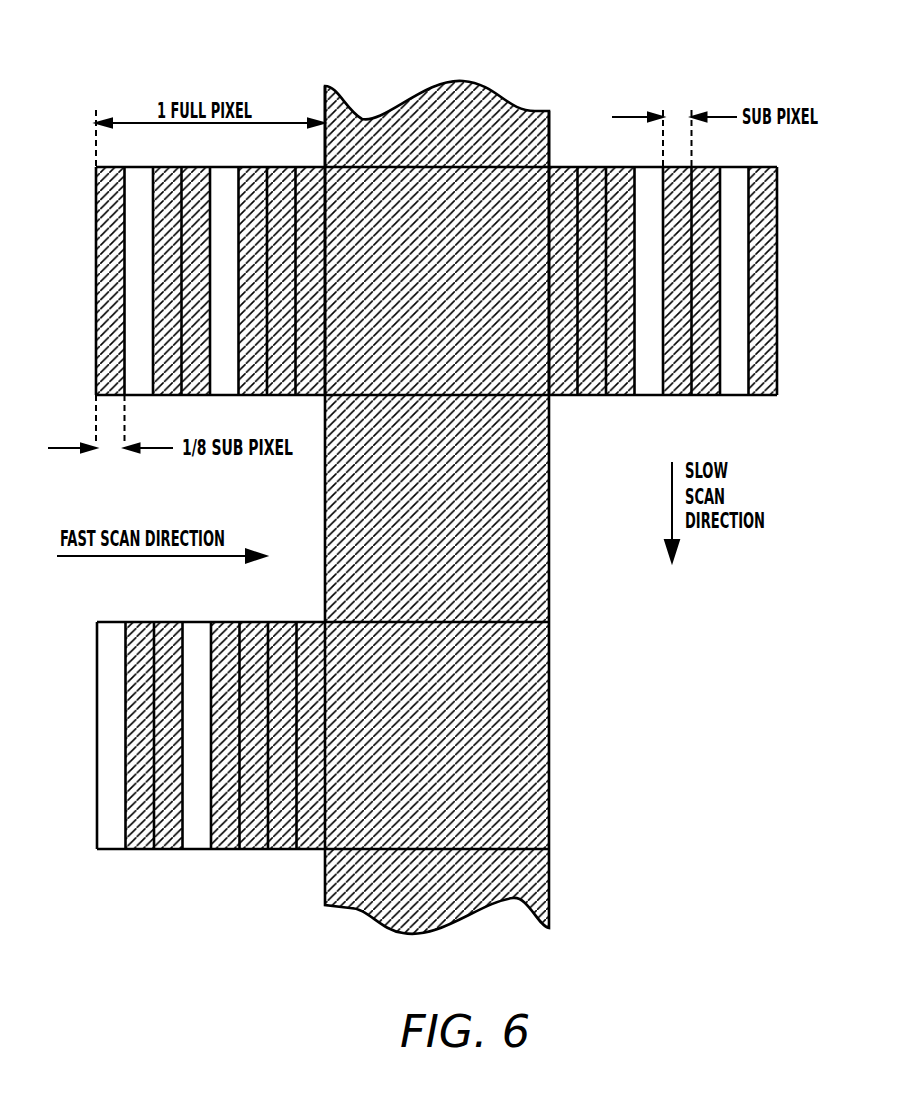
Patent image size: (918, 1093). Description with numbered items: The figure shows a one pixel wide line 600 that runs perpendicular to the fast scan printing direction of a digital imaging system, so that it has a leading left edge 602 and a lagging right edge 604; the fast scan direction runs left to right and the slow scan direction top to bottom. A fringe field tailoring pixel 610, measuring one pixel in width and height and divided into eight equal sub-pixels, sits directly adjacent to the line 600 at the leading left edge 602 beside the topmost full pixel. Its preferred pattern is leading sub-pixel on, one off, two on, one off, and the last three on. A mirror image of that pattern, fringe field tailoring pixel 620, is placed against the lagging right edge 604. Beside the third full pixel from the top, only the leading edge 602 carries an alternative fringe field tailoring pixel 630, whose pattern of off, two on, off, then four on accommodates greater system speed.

The one pixel wide line 600 is at (486, 70).
The leading left edge 602 is at (323, 106).
The lagging right edge 604 is at (550, 136).
The fringe field tailoring pixel 610 is at (86, 271).
The fringe field tailoring pixel 620 is at (648, 410).
The fringe field tailoring pixel 630 is at (208, 864).